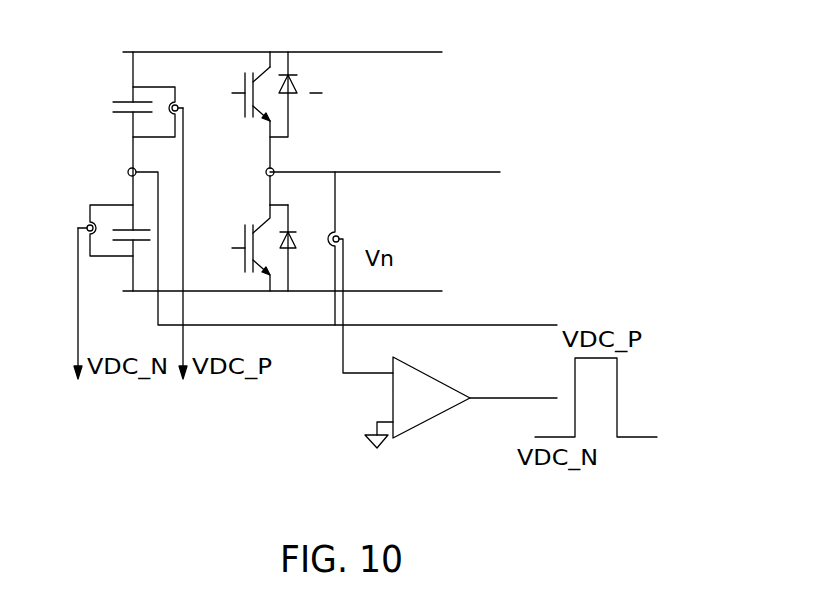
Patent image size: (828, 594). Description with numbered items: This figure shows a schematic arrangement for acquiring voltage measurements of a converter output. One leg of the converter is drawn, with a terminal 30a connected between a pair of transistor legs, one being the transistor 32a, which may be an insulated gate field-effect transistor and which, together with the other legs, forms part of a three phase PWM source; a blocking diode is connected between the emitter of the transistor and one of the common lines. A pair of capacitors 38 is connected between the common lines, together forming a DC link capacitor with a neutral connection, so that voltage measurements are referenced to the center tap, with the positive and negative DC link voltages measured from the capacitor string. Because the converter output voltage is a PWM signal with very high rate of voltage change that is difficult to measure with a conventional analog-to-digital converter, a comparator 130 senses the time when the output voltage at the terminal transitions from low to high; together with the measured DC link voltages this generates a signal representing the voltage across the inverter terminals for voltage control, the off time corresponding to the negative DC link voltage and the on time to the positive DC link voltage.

The capacitors 38 is at (145, 103).
The terminal 30a is at (265, 68).
The transistor leg 32a is at (262, 266).
The comparator 130 is at (455, 383).